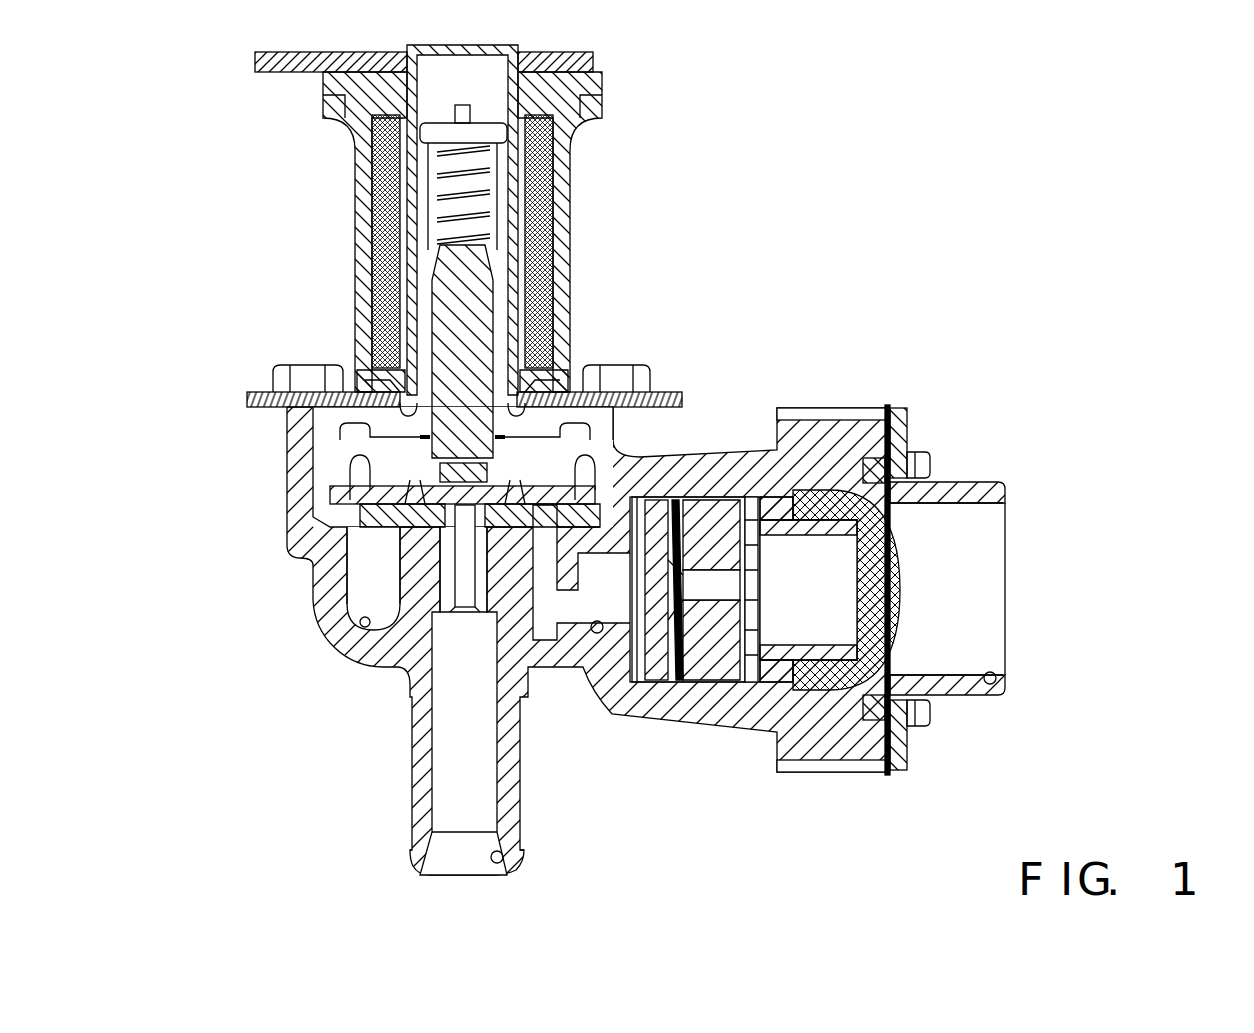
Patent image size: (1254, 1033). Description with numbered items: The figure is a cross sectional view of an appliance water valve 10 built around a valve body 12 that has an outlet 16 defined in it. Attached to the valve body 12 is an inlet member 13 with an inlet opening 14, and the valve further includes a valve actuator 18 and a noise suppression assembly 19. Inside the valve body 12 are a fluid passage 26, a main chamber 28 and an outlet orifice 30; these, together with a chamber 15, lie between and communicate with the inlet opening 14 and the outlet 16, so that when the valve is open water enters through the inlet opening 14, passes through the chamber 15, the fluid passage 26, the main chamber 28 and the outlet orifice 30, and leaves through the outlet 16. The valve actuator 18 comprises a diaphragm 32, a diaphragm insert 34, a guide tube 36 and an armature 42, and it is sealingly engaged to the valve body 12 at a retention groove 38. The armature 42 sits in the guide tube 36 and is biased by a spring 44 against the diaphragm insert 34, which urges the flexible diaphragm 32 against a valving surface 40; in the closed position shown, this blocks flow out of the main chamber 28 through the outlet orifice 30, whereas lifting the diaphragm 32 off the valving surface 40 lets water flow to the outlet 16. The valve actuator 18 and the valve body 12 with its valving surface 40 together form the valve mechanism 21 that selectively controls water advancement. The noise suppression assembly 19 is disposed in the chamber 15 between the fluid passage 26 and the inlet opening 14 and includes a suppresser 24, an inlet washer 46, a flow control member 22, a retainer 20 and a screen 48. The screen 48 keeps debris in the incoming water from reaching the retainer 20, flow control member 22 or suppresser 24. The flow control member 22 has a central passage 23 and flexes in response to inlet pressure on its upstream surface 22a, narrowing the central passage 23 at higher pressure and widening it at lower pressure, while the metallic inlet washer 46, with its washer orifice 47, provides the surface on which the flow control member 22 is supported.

The appliance water valve 10 is at (947, 157).
The valve body 12 is at (760, 365).
The inlet member 13 is at (988, 472).
The inlet opening 14 is at (1005, 677).
The chamber 15 is at (907, 727).
The outlet 16 is at (495, 870).
The valve actuator 18 is at (432, 263).
The noise suppression assembly 19 is at (913, 452).
The retainer 20 is at (767, 500).
The valve mechanism 21 is at (310, 617).
The flow control member 22 is at (713, 667).
The upstream surface 22a is at (760, 680).
The central passage 23 is at (705, 575).
The suppresser 24 is at (652, 672).
The fluid passage 26 is at (600, 630).
The main chamber 28 is at (395, 600).
The outlet orifice 30 is at (363, 622).
The diaphragm 32 is at (557, 585).
The diaphragm insert 34 is at (473, 607).
The guide tube 36 is at (575, 435).
The retention groove 38 is at (612, 455).
The valving surface 40 is at (393, 543).
The armature 42 is at (467, 275).
The spring 44 is at (495, 172).
The inlet washer 46 is at (677, 497).
The washer orifice 47 is at (688, 628).
The screen 48 is at (862, 500).